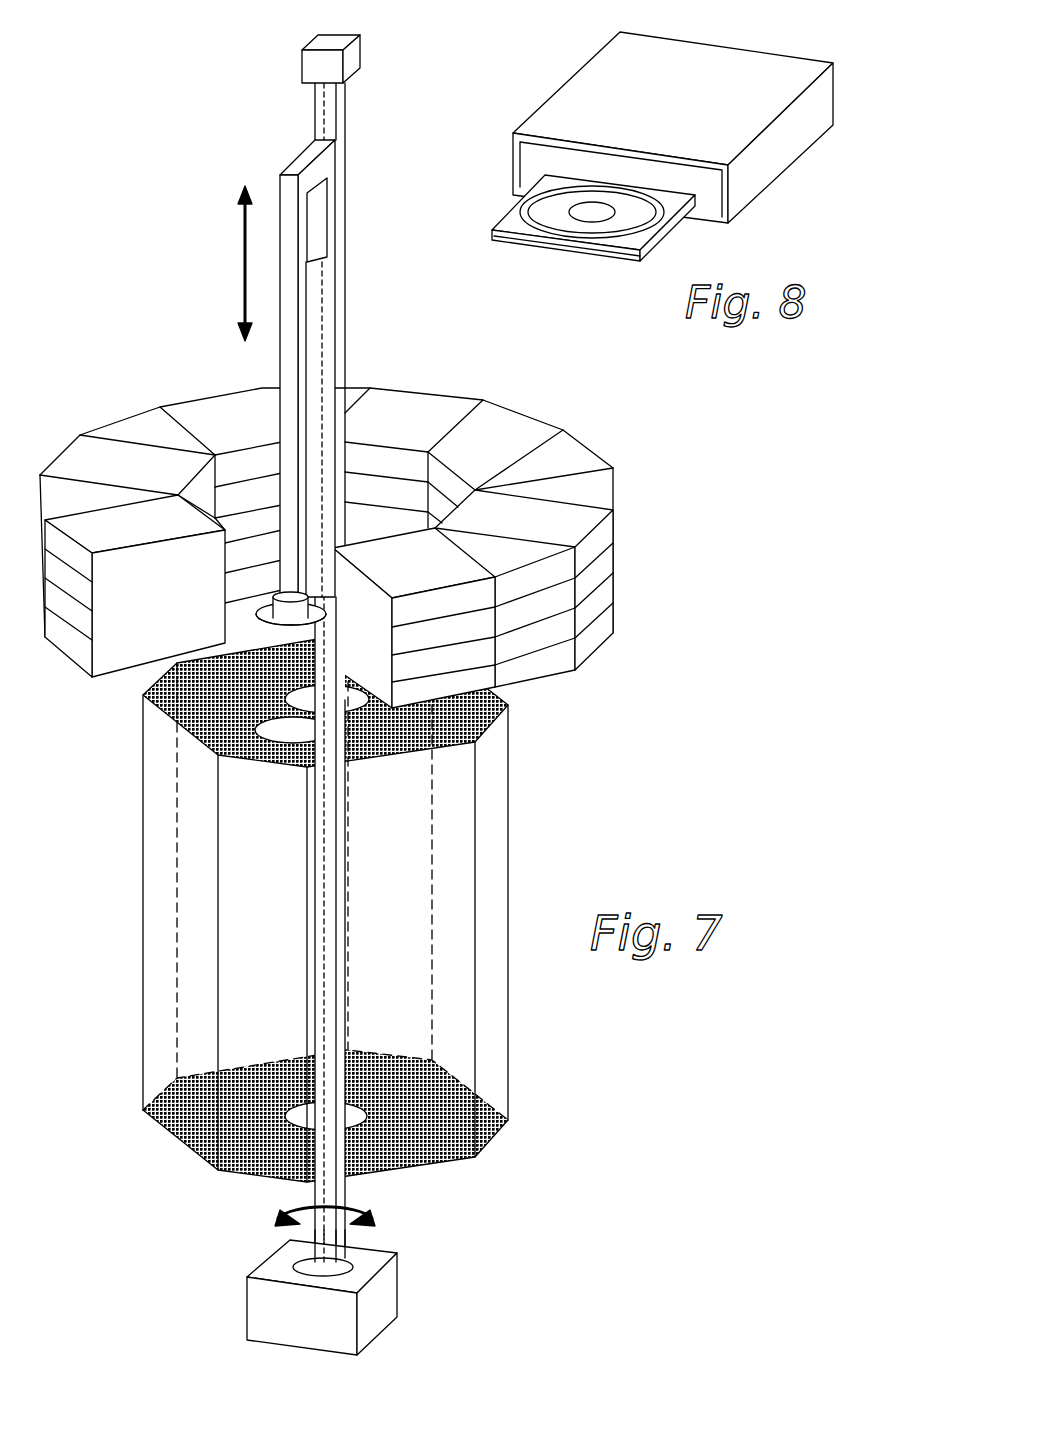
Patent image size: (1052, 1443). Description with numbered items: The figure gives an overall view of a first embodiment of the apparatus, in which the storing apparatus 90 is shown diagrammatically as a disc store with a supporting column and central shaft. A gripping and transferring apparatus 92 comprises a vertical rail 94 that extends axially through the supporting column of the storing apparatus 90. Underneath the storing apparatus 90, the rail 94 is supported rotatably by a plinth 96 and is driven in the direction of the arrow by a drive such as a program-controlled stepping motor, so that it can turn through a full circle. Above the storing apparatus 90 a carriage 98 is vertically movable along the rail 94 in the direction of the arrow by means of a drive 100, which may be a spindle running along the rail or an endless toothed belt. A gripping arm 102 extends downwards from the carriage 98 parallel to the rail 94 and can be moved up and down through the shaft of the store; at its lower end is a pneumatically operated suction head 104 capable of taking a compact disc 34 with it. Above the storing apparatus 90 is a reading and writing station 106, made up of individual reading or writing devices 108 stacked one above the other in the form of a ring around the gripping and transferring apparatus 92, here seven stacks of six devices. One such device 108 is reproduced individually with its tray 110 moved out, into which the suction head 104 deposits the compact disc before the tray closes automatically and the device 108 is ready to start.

In FIG. 7, the compact disc 34 is at (278, 612).
In FIG. 7, the storing apparatus 90 is at (530, 795).
In FIG. 7, the gripping and transferring apparatus 92 is at (334, 640).
In FIG. 7, the vertical rail 94 is at (347, 108).
In FIG. 7, the plinth 96 is at (402, 1276).
In FIG. 7, the carriage 98 is at (327, 190).
In FIG. 7, the drive 100 is at (365, 48).
In FIG. 7, the gripping arm 102 is at (307, 368).
In FIG. 7, the suction head 104 is at (287, 613).
In FIG. 7, the reading and writing station 106 is at (376, 556).
In FIG. 7, the reading or writing device 108 is at (600, 508).
In FIG. 8, the reading or writing device 108 is at (713, 60).
In FIG. 8, the tray 110 is at (492, 236).